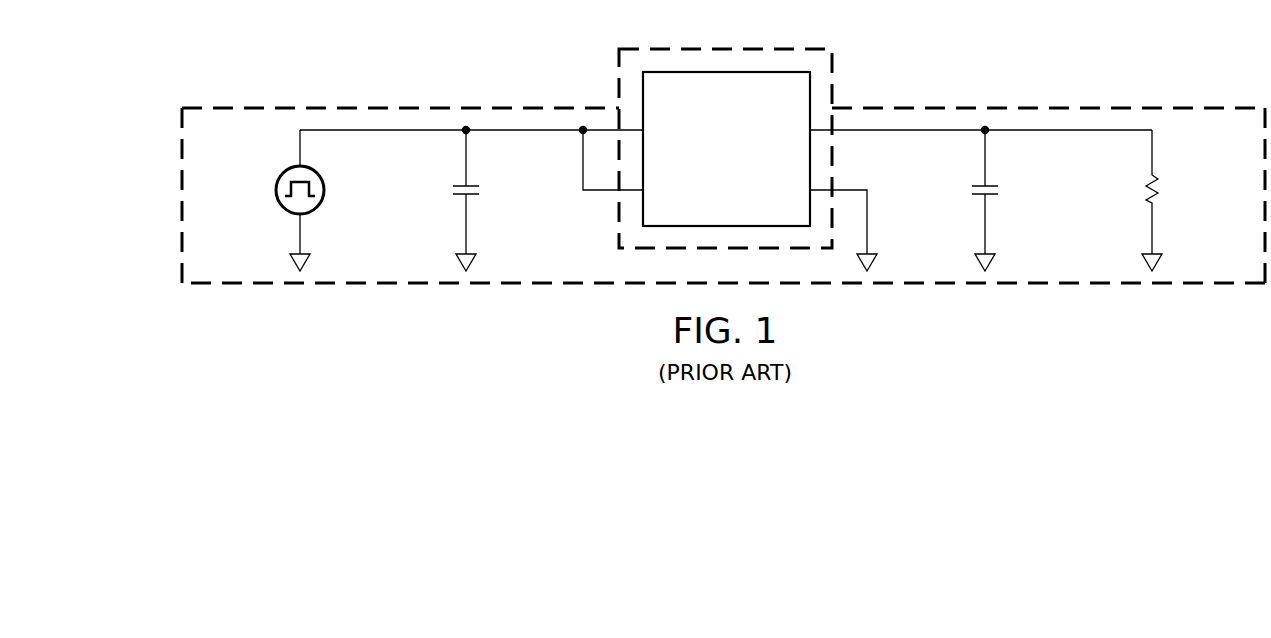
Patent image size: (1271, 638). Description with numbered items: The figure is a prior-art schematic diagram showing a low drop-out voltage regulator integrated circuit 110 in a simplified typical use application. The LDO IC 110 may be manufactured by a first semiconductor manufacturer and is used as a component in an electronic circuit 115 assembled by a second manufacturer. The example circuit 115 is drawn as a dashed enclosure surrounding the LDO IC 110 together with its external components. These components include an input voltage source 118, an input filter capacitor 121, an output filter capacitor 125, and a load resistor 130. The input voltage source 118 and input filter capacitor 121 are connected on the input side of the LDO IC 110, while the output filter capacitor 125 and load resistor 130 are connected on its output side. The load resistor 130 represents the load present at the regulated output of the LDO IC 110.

The low drop-out voltage regulator integrated circuit 110 is at (610, 75).
The electronic circuit 115 is at (172, 163).
The input voltage source 118 is at (276, 186).
The input filter capacitor 121 is at (454, 189).
The output filter capacitor 125 is at (973, 189).
The load resistor 130 is at (1146, 189).